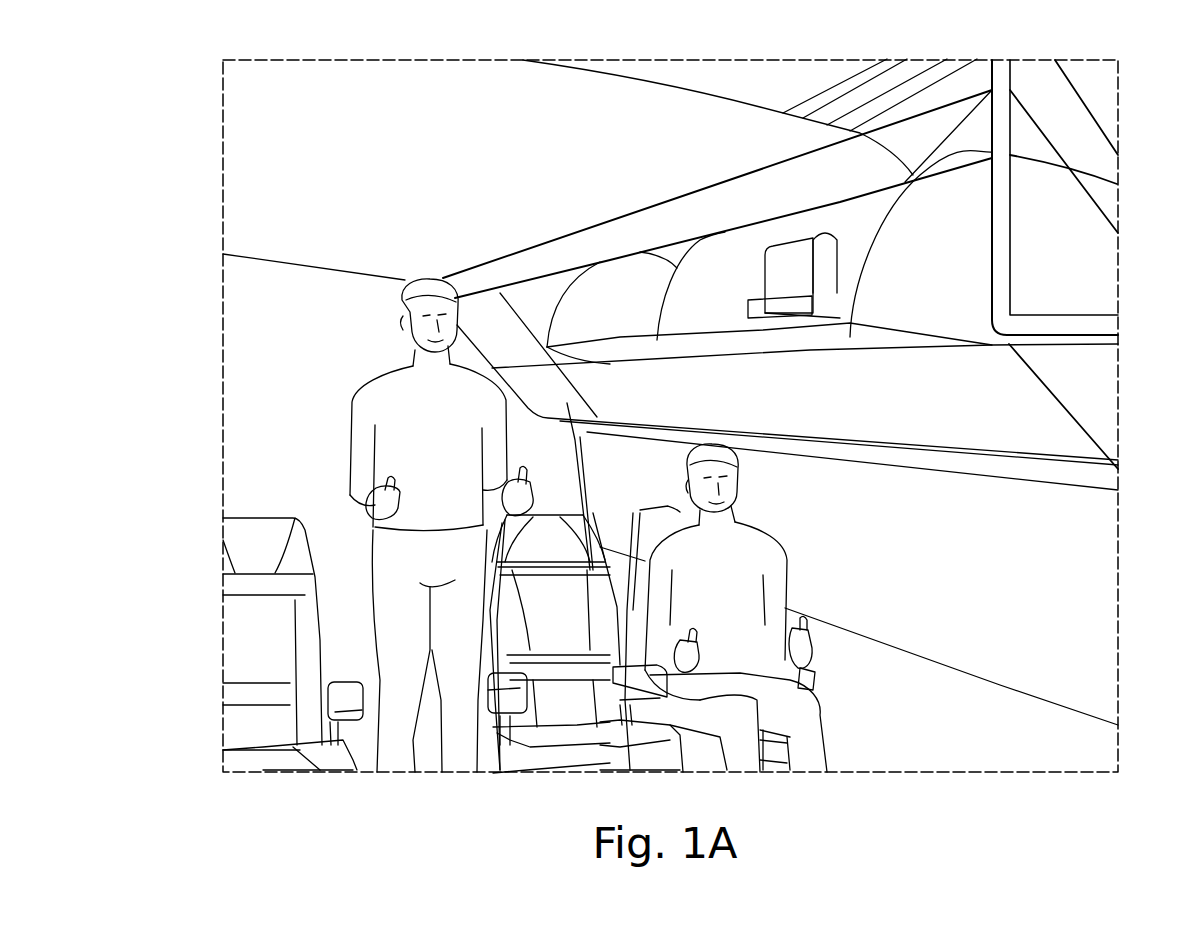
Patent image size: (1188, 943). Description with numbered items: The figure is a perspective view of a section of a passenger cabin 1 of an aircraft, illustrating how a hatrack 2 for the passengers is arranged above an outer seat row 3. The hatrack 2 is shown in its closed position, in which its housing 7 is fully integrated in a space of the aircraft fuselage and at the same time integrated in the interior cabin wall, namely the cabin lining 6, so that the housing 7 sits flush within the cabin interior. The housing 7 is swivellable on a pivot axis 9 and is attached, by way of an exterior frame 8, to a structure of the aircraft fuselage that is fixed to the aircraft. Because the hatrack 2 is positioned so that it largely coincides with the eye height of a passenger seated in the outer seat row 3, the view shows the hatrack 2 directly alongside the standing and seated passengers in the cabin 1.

The passenger cabin 1 is at (265, 403).
The hatrack 2 is at (1130, 289).
The outer seat row 3 is at (605, 763).
The cabin lining 6 is at (383, 82).
The housing 7 is at (1080, 267).
The exterior frame 8 is at (1015, 198).
The pivot axis 9 is at (1003, 325).